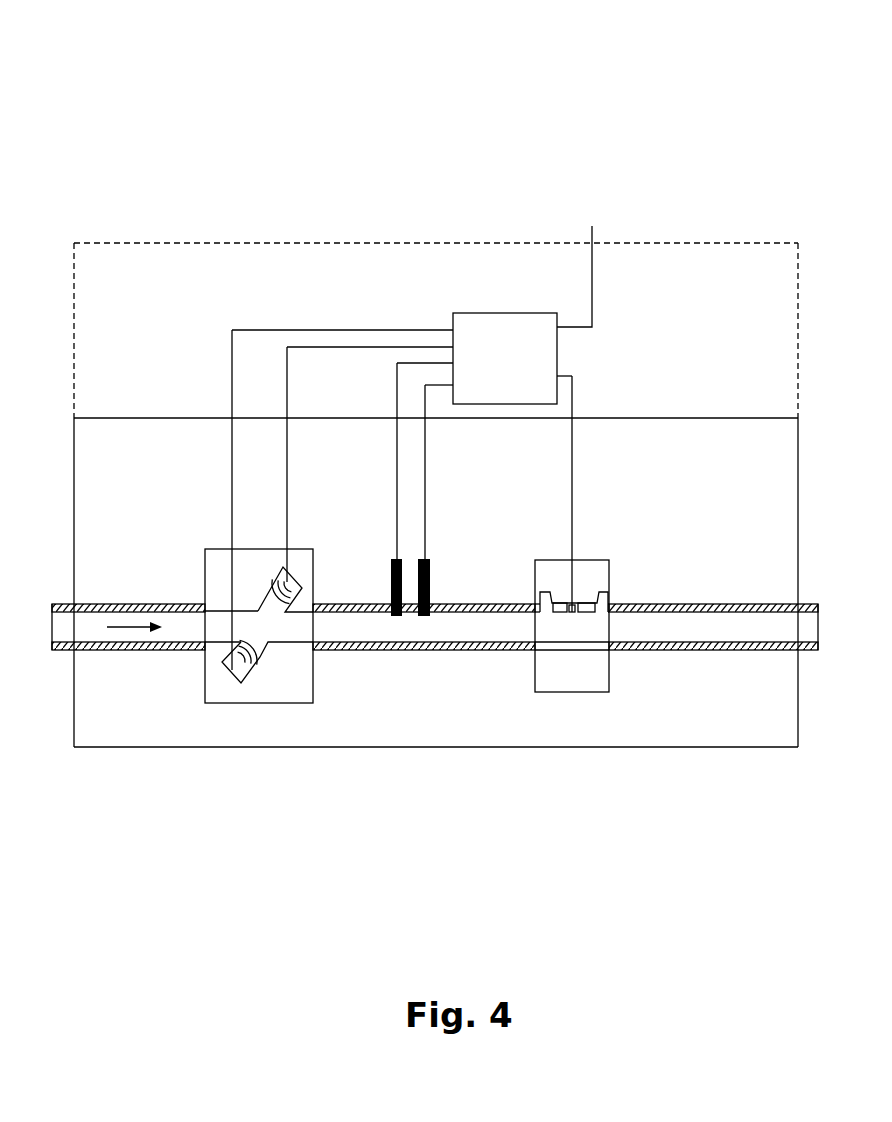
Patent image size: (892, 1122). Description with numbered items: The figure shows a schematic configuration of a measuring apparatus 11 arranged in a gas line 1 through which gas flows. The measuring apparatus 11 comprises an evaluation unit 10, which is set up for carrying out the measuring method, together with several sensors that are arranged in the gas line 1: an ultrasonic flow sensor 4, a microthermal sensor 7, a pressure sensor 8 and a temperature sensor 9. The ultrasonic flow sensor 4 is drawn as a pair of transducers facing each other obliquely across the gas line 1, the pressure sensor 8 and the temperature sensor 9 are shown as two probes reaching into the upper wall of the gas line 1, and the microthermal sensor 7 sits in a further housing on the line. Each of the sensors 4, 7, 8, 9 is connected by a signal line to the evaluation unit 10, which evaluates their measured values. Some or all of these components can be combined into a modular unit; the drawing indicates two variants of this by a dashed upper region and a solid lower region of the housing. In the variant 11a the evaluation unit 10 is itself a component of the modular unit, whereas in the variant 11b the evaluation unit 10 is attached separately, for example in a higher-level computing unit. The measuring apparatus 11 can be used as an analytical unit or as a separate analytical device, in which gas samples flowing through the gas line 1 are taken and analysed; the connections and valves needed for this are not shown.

The gas line 1 is at (776, 627).
The ultrasonic flow sensor 4 is at (283, 668).
The microthermal sensor 7 is at (601, 669).
The pressure sensor 8 is at (388, 572).
The temperature sensor 9 is at (433, 572).
The evaluation unit 10 is at (468, 323).
The measuring apparatus 11 is at (688, 100).
The variant with integrated evaluation unit 11a is at (709, 243).
The variant with separately attached evaluation unit 11b is at (710, 418).